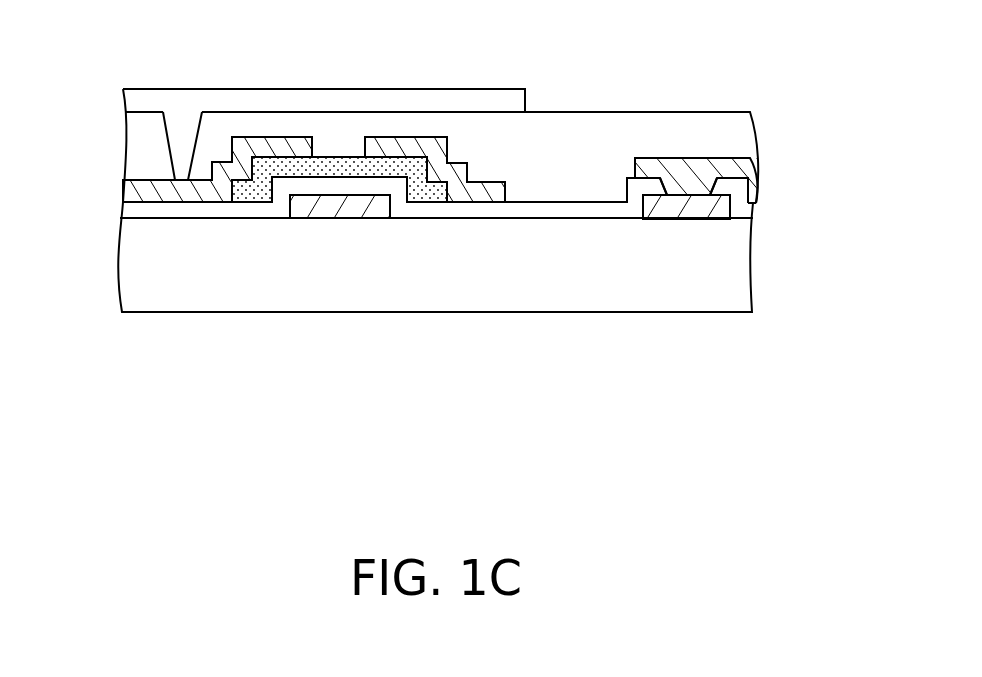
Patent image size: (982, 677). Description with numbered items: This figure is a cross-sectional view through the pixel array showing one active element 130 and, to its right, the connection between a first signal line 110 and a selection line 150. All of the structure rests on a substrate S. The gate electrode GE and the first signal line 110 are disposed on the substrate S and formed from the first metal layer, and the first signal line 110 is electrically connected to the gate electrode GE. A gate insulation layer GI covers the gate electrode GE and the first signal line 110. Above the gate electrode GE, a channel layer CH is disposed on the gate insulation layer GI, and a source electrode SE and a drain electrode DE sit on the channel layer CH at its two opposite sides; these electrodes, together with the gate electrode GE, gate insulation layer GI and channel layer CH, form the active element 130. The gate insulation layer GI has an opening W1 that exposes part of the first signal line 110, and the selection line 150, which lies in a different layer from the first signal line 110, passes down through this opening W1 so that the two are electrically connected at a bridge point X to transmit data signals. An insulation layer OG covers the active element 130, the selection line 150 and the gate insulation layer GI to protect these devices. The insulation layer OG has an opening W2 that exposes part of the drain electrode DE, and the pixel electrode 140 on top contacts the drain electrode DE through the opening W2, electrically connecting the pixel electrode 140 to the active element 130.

The substrate S is at (130, 270).
The insulation layer OG is at (747, 140).
The pixel electrode 140 is at (130, 102).
The opening W2 is at (171, 146).
The active element 130 is at (418, 283).
The gate insulation layer GI is at (400, 210).
The gate electrode GE is at (338, 208).
The drain electrode DE is at (212, 190).
The channel layer CH is at (266, 192).
The source electrode SE is at (434, 250).
The first signal line 110 is at (675, 207).
The selection line 150 is at (747, 166).
The opening W1 is at (675, 182).
The bridge point X is at (694, 189).